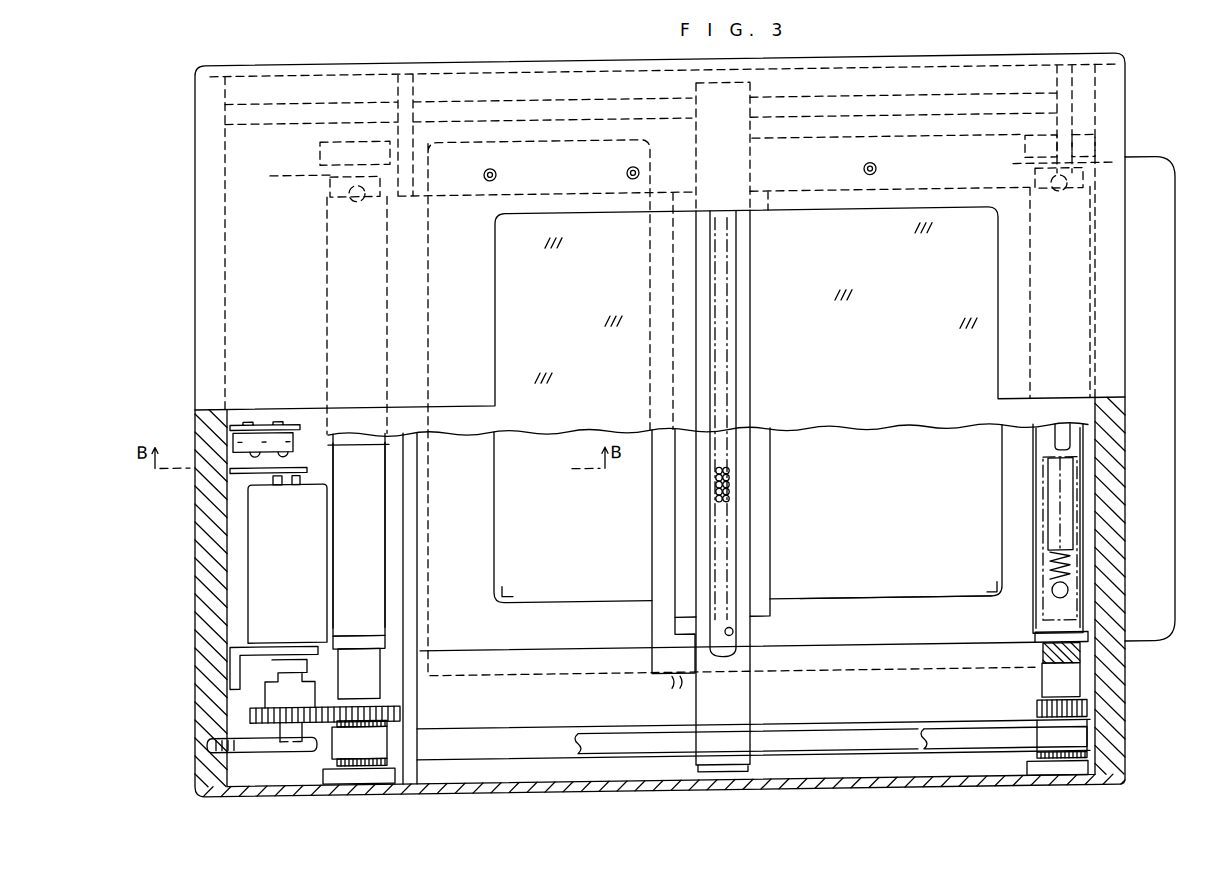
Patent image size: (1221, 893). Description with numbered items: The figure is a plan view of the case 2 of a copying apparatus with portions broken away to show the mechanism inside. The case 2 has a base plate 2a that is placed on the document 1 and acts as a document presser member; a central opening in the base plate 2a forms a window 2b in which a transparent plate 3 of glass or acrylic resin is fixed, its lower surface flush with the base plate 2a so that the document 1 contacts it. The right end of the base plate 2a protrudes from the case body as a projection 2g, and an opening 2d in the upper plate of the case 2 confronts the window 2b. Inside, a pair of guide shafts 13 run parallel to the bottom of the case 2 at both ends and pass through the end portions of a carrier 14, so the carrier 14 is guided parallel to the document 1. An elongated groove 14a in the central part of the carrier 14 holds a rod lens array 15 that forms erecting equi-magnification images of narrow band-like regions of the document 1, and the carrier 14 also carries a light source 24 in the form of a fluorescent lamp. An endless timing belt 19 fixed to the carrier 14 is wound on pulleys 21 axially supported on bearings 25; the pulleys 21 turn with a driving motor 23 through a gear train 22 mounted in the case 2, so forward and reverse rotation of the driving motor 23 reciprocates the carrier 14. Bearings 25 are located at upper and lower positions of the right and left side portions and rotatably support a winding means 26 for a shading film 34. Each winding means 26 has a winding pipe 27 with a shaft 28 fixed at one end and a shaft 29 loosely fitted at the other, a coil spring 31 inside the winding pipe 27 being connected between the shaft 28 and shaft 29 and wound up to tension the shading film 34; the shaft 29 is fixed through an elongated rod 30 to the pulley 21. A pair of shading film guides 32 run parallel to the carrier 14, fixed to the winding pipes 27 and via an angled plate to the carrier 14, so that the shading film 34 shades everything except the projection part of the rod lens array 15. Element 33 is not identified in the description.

The document 1 is at (930, 145).
The case 2 is at (1115, 256).
The base plate 2a is at (580, 645).
The window 2b is at (496, 494).
The opening 2d is at (590, 224).
The projection 2g is at (1160, 442).
The transparent plate 3 is at (916, 597).
The guide shafts 13 is at (870, 135).
The carrier 14 is at (742, 708).
The elongated groove 14a is at (730, 642).
The rod lens array 15 is at (730, 495).
The timing belt 19 is at (505, 745).
The pulleys 21 is at (345, 760).
The gear train 22 is at (250, 717).
The driving motor 23 is at (262, 528).
The light source 24 is at (670, 538).
The bearings 25 is at (320, 155).
The winding means 26 is at (392, 495).
The winding pipe 27 is at (345, 190).
The shaft 28 is at (333, 178).
The shaft 29 is at (380, 648).
The elongated rod 30 is at (365, 685).
The coil spring 31 is at (1068, 580).
The shading film guides 32 is at (1062, 77).
The guide column 33 is at (682, 496).
The shading film 34 is at (879, 422).